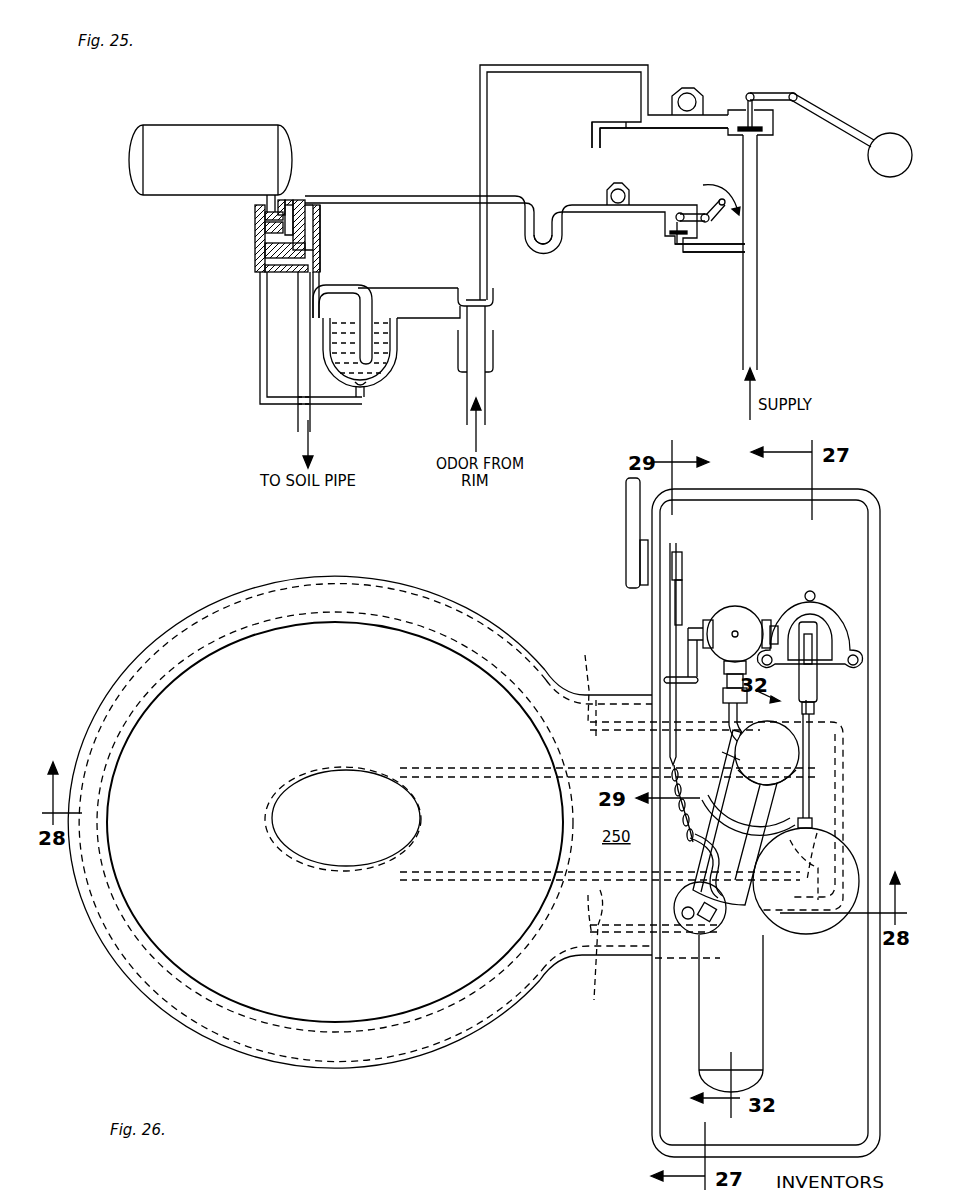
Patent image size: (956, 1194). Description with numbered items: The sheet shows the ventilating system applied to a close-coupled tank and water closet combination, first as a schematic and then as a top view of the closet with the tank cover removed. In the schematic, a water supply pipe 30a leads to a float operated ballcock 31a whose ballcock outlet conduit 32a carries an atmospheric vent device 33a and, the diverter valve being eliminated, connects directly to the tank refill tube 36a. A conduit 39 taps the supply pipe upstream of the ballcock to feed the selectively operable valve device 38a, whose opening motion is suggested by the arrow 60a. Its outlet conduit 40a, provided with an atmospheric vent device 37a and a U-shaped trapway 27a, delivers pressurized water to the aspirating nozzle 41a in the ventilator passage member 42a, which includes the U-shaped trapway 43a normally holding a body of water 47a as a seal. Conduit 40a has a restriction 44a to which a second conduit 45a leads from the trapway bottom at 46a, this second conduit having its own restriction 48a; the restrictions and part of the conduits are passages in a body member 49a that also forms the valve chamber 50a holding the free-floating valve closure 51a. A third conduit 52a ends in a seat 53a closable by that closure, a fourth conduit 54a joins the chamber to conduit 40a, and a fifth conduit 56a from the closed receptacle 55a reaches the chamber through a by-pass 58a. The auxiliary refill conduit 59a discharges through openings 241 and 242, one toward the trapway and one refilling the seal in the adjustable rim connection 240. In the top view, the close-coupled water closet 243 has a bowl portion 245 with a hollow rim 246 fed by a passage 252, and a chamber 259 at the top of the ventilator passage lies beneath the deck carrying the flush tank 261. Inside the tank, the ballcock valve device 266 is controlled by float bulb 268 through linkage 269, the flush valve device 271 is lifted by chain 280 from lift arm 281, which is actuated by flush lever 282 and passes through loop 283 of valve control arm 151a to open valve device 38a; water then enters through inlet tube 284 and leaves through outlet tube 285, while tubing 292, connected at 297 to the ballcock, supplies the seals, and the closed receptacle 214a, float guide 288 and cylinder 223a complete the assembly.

In FIG. 25, the closed receptacle 55a is at (203, 128).
In FIG. 25, the fifth conduit 56a is at (265, 215).
In FIG. 25, the by-pass 58a is at (282, 200).
In FIG. 25, the free-floating valve closure 51a is at (290, 208).
In FIG. 25, the valve chamber 50a is at (302, 212).
In FIG. 25, the seat 53a is at (265, 229).
In FIG. 25, the third conduit 52a is at (265, 252).
In FIG. 25, the fourth conduit 54a is at (320, 218).
In FIG. 25, the body member 49a is at (258, 272).
In FIG. 25, the restriction 44a is at (321, 262).
In FIG. 25, the conduit 40a is at (500, 199).
In FIG. 25, the U-shaped trapway 27a is at (546, 255).
In FIG. 25, the atmospheric vent device 37a is at (628, 195).
In FIG. 25, the auxiliary refill conduit 59a is at (478, 152).
In FIG. 25, the tank refill tube 36a is at (590, 134).
In FIG. 25, the ballcock outlet conduit 32a is at (626, 123).
In FIG. 25, the atmospheric vent device 33a is at (701, 92).
In FIG. 25, the float operated ballcock 31a is at (774, 140).
In FIG. 25, the water supply pipe 30a is at (752, 322).
In FIG. 25, the linkage 269 is at (818, 92).
In FIG. 26, the linkage 269 is at (809, 765).
In FIG. 25, the float bulb 268 is at (897, 135).
In FIG. 26, the float bulb 268 is at (805, 935).
In FIG. 25, the lever motion 60a is at (732, 185).
In FIG. 25, the selectively operable valve device 38a is at (663, 241).
In FIG. 26, the selectively operable valve device 38a is at (734, 604).
In FIG. 25, the conduit 39 is at (710, 254).
In FIG. 25, the second conduit 45a is at (260, 351).
In FIG. 25, the restriction 48a is at (296, 278).
In FIG. 25, the aspirating nozzle 41a is at (320, 290).
In FIG. 25, the ventilator passage member 42a is at (375, 285).
In FIG. 26, the ventilator passage member 42a is at (696, 873).
In FIG. 25, the U-shaped trapway 43a is at (395, 352).
In FIG. 25, the body of water 47a is at (382, 376).
In FIG. 25, the trapway bottom connection 46a is at (362, 400).
In FIG. 25, the opening 241 is at (458, 288).
In FIG. 25, the opening 242 is at (490, 300).
In FIG. 25, the upstream modification 240 is at (504, 349).
In FIG. 26, the hollow rim 246 is at (330, 577).
In FIG. 26, the close-coupled water closet 243 is at (228, 578).
In FIG. 26, the bowl portion 245 is at (180, 820).
In FIG. 26, the flush tank 261 is at (652, 1108).
In FIG. 26, the flush lever 282 is at (630, 509).
In FIG. 26, the lift arm 281 is at (670, 660).
In FIG. 26, the loop 283 is at (664, 680).
In FIG. 26, the valve control arm 151a is at (688, 642).
In FIG. 26, the inlet tube 284 is at (772, 626).
In FIG. 26, the ballcock valve device 266 is at (849, 610).
In FIG. 26, the connection 297 is at (817, 681).
In FIG. 26, the tubing 292 is at (780, 726).
In FIG. 26, the outlet tube 285 is at (734, 744).
In FIG. 26, the float rod guide 288 is at (809, 800).
In FIG. 26, the flush valve cylinder 223a is at (738, 935).
In FIG. 26, the closed receptacle 214a is at (764, 1060).
In FIG. 26, the chain 280 is at (683, 805).
In FIG. 26, the flush valve device 271 is at (690, 844).
In FIG. 26, the passage 252 is at (621, 806).
In FIG. 26, the chamber 259 is at (590, 951).